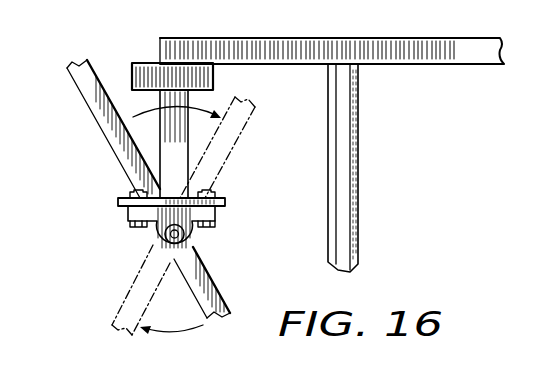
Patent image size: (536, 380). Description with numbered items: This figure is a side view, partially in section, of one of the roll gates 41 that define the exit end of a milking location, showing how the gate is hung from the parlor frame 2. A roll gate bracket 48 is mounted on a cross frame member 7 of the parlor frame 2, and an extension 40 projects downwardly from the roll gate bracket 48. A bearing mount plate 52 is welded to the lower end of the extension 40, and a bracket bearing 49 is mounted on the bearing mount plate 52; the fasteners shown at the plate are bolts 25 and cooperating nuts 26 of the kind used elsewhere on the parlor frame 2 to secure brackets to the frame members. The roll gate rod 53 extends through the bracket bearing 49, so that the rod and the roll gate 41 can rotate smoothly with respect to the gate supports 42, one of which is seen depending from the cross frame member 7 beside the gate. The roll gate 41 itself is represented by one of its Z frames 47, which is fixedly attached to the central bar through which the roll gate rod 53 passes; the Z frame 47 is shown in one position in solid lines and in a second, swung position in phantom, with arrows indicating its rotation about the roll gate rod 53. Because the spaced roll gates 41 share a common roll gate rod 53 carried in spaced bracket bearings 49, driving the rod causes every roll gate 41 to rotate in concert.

The parlor frame 2 is at (452, 28).
The cross frame member 7 is at (300, 52).
The bolts 25 is at (130, 224).
The nuts 26 is at (128, 192).
The extension 40 is at (188, 103).
The roll gate 41 is at (105, 62).
The gate support 42 is at (357, 170).
The Z frame 47 is at (110, 123).
The roll gate bracket 48 is at (143, 73).
The bracket bearing 49 is at (198, 240).
The bearing mount plate 52 is at (216, 193).
The roll gate rod 53 is at (165, 236).